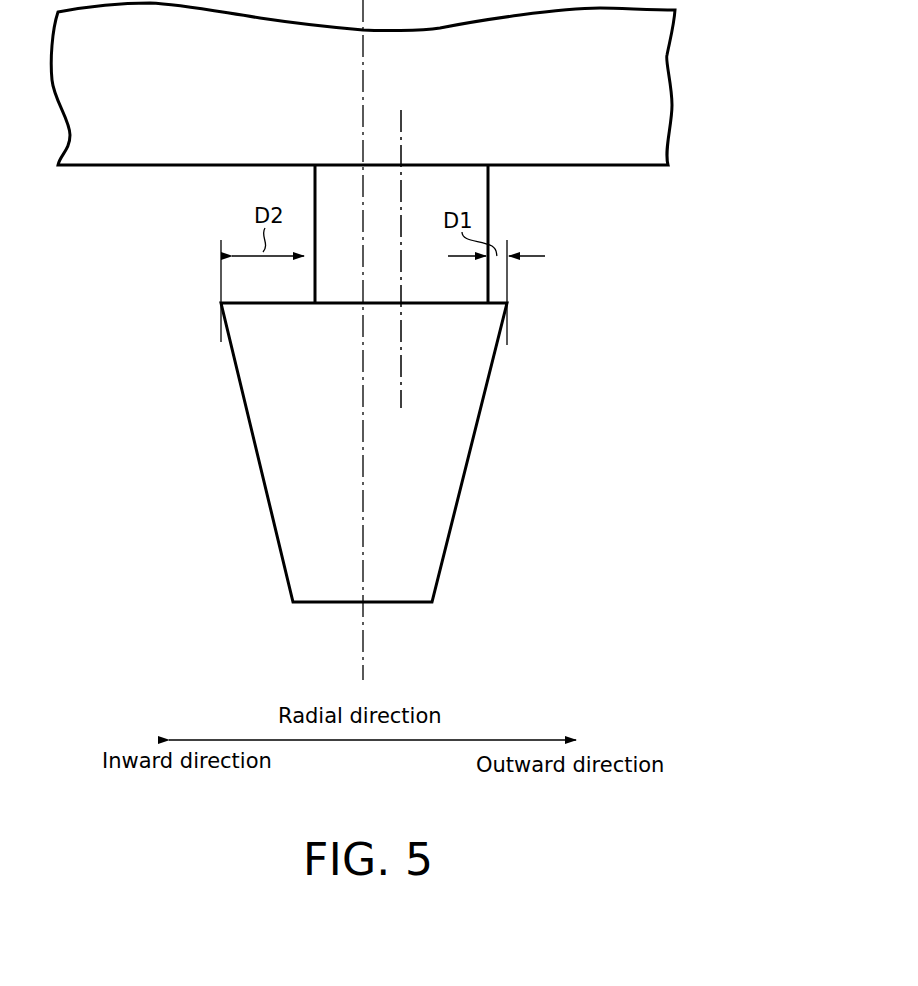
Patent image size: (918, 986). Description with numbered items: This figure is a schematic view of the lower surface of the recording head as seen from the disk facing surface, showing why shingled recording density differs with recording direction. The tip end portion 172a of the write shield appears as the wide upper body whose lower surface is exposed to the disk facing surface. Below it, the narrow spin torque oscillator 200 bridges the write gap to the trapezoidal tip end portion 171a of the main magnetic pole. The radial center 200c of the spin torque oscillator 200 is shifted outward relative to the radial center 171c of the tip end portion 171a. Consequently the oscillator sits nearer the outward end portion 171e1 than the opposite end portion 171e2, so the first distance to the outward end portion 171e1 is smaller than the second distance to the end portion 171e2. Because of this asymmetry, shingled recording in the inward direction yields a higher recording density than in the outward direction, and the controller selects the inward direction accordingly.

The tip end portion of the write shield 172a is at (668, 105).
The spin torque oscillator 200 is at (488, 210).
The radial center of the spin torque oscillator 200c is at (401, 390).
The tip end portion of the main magnetic pole 171a is at (452, 457).
The outward end portion 171e1 is at (521, 311).
The end portion opposite the first end portion 171e2 is at (205, 304).
The radial center of the tip end portion of the main magnetic pole 171c is at (364, 655).